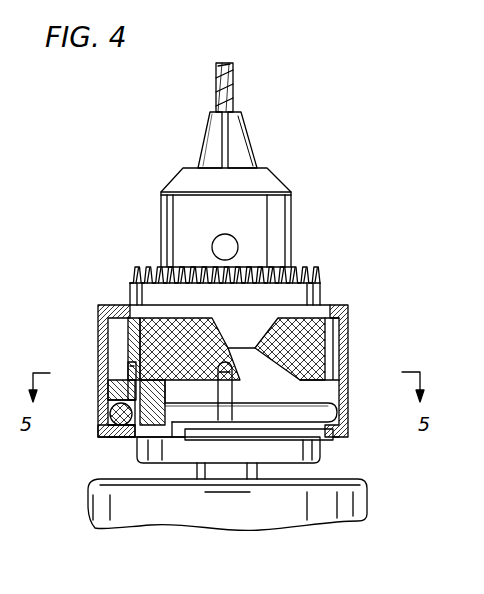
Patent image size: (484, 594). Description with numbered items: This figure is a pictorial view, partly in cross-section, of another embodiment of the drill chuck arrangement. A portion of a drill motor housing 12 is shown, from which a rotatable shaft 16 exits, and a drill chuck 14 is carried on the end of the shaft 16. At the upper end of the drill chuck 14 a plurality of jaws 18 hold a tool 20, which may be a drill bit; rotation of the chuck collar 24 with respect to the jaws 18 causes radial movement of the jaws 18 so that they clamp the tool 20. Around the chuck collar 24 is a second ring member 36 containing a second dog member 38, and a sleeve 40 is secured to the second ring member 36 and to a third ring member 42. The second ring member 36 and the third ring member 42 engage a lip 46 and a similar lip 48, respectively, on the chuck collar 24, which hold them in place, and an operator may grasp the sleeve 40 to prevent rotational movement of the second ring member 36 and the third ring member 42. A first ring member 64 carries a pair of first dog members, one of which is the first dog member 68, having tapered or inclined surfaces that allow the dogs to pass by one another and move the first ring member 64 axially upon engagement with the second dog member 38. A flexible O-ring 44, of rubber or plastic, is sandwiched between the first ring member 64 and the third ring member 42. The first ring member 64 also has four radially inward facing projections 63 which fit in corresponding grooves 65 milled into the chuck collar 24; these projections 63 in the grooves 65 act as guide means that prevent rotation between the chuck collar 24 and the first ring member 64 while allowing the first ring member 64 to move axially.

The drill motor housing 12 is at (92, 510).
The drill chuck 14 is at (108, 185).
The rotatable shaft 16 is at (262, 470).
The jaws 18 is at (245, 133).
The tool 20 is at (233, 82).
The chuck collar 24 is at (138, 282).
The second ring member 36 is at (325, 306).
The second dog member 38 is at (245, 330).
The sleeve 40 is at (348, 383).
The third ring member 42 is at (325, 440).
The O-ring 44 is at (323, 418).
The lip 46 is at (130, 325).
The lip 48 is at (125, 440).
The radially inward facing projections 63 is at (112, 400).
The first ring member 64 is at (312, 395).
The grooves 65 is at (128, 370).
The first dog member 68 is at (283, 370).